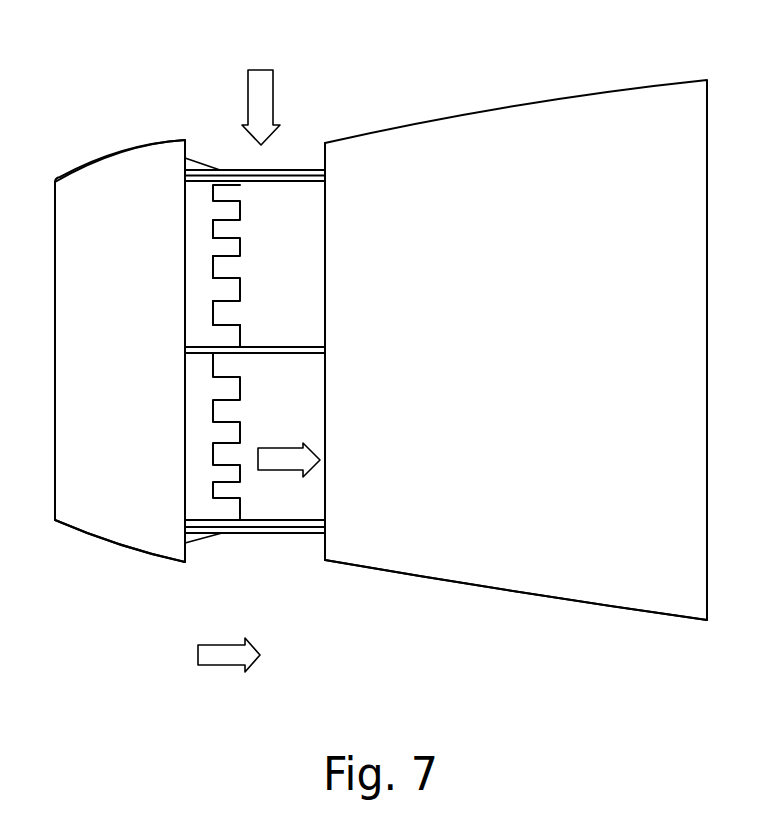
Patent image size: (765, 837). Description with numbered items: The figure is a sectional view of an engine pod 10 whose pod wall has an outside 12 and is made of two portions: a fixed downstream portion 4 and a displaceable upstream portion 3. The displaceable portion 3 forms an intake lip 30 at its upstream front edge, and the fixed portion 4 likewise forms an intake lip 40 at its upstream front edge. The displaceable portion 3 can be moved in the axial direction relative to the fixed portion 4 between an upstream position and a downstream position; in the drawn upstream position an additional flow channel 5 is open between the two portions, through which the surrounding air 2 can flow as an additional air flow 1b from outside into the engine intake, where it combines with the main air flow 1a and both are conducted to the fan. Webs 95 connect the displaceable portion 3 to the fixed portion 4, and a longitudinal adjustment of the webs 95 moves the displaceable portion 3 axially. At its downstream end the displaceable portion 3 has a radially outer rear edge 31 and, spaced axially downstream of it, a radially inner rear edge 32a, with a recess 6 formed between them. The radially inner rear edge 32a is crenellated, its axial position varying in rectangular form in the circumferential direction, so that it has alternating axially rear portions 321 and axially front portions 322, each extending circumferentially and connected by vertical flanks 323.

The engine pod 10 is at (458, 78).
The main air flow 1a is at (277, 462).
The additional air flow 1b is at (264, 82).
The surrounding air 2 is at (222, 656).
The displaceable upstream portion 3 is at (158, 150).
The intake lip 30 is at (73, 178).
The radially outer rear edge 31 is at (189, 548).
The fixed downstream portion 4 is at (553, 145).
The intake lip 40 is at (328, 143).
The additional flow channel 5 is at (233, 150).
The recess 6 is at (199, 163).
The outside 12 is at (115, 538).
The webs 95 is at (280, 532).
The radially inner rear edge 32a is at (240, 252).
The axially rear portions 321 is at (240, 342).
The axially front portions 322 is at (215, 272).
The vertical flanks 323 is at (227, 232).